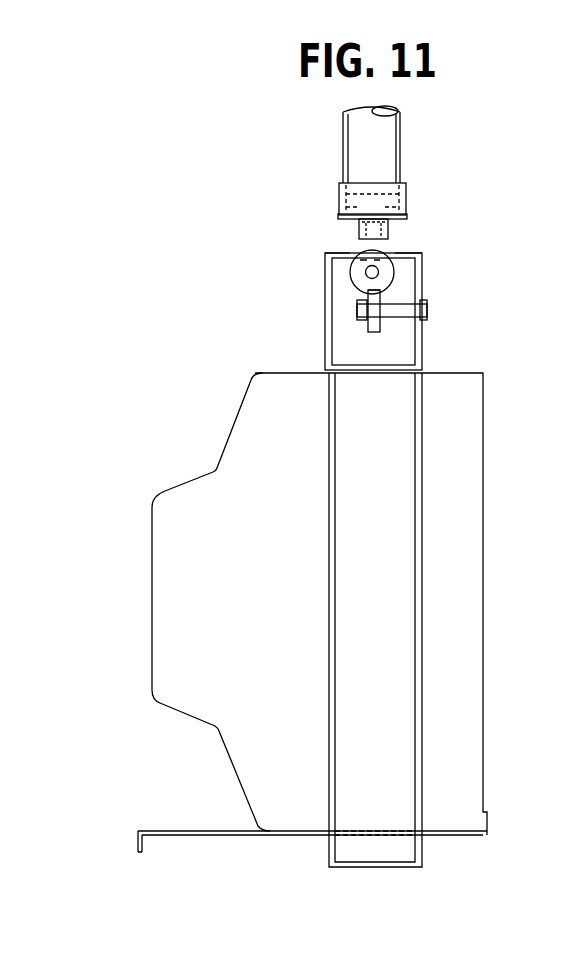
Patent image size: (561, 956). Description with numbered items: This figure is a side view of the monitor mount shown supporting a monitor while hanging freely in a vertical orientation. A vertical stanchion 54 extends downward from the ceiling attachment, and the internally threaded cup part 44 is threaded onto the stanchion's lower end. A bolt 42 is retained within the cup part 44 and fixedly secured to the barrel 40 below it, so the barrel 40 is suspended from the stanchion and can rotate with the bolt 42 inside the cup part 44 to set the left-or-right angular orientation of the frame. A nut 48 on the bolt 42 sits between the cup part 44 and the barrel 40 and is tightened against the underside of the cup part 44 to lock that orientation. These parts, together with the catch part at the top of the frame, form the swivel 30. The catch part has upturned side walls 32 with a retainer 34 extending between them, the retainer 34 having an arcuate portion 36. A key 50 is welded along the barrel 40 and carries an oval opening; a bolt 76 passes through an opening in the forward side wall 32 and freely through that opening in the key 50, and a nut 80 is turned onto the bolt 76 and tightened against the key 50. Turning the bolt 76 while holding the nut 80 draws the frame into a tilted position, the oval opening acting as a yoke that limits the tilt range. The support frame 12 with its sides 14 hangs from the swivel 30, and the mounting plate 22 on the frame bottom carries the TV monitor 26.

The support frame 12 is at (358, 516).
The sides 14 is at (346, 602).
The mounting plate 22 is at (182, 831).
The TV monitor 26 is at (466, 392).
The swivel 30 is at (399, 229).
The side walls 32 is at (424, 353).
The retainer 34 is at (340, 251).
The arcuate portion 36 is at (396, 244).
The barrel 40 is at (394, 272).
The bolt 42 is at (398, 208).
The cup part 44 is at (406, 184).
The nut 48 is at (356, 228).
The key 50 is at (373, 333).
The stanchion 54 is at (400, 135).
The bolt 76 is at (429, 312).
The nut 80 is at (366, 298).